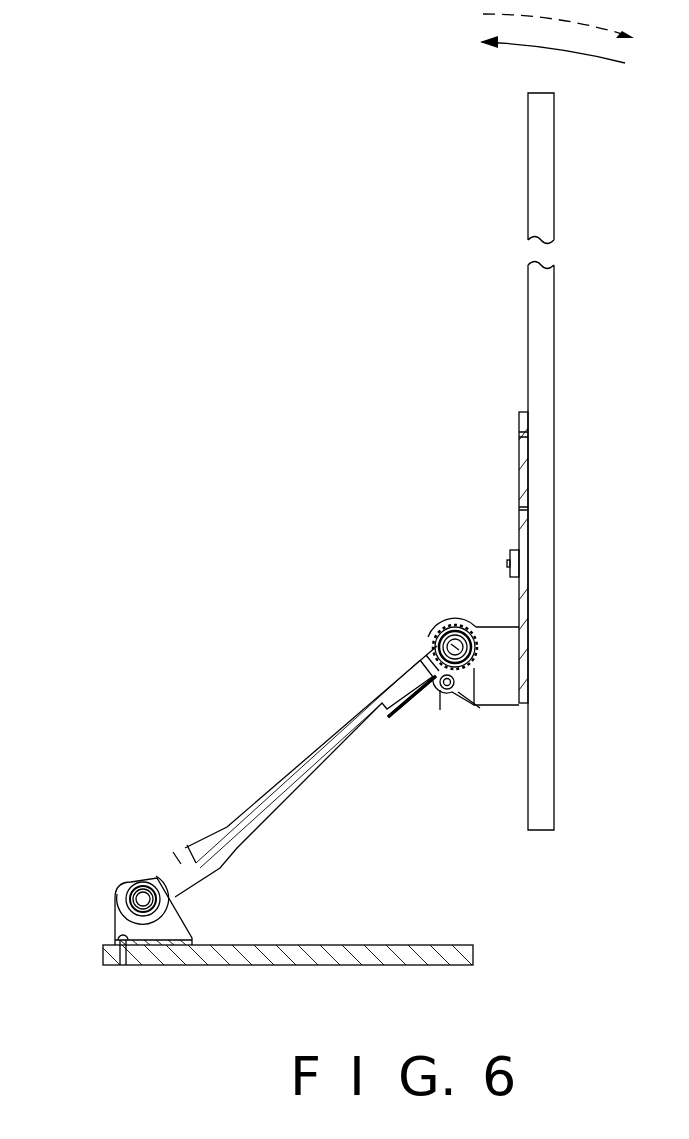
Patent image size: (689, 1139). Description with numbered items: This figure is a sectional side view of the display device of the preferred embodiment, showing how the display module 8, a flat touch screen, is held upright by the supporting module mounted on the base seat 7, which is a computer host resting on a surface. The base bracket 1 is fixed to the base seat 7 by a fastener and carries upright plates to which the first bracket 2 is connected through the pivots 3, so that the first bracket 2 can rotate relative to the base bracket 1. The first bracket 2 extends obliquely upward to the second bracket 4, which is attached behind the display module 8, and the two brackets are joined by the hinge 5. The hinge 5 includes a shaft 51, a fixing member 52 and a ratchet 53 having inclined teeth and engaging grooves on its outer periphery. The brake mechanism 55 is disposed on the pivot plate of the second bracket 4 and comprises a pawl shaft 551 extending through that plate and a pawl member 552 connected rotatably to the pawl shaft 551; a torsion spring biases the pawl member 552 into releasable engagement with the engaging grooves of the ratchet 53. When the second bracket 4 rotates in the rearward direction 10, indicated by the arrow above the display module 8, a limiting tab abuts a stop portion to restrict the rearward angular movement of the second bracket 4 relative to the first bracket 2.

The base bracket 1 is at (115, 920).
The first bracket 2 is at (260, 797).
The pivot 3 is at (128, 885).
The second bracket 4 is at (518, 470).
The hinge 5 is at (429, 670).
The base seat 7 is at (108, 957).
The display module 8 is at (546, 780).
The rearward direction 10 is at (568, 52).
The shaft 51 is at (435, 640).
The fixing member 52 is at (457, 640).
The ratchet 53 is at (448, 628).
The brake mechanism 55 is at (451, 738).
The pawl shaft 551 is at (445, 683).
The pawl member 552 is at (453, 690).